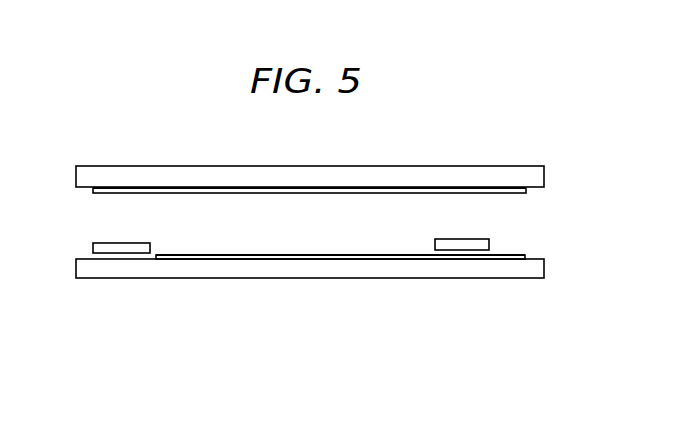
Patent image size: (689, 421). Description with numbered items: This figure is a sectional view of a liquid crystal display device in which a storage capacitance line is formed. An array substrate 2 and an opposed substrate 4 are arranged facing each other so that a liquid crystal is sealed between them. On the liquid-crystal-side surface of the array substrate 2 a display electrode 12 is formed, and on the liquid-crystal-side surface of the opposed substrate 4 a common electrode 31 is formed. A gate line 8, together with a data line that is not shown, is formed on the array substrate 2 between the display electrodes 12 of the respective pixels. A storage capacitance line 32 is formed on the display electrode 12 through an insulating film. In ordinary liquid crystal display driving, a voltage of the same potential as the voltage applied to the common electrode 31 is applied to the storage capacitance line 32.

The opposed substrate 4 is at (489, 166).
The common electrode 31 is at (368, 196).
The gate line 8 is at (122, 242).
The storage capacitance line 32 is at (487, 240).
The display electrode 12 is at (520, 255).
The array substrate 2 is at (458, 269).